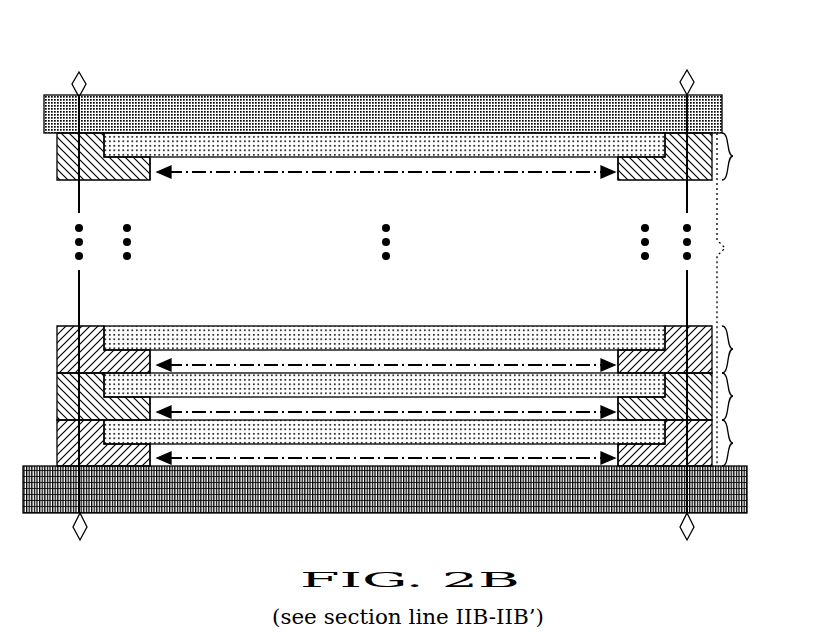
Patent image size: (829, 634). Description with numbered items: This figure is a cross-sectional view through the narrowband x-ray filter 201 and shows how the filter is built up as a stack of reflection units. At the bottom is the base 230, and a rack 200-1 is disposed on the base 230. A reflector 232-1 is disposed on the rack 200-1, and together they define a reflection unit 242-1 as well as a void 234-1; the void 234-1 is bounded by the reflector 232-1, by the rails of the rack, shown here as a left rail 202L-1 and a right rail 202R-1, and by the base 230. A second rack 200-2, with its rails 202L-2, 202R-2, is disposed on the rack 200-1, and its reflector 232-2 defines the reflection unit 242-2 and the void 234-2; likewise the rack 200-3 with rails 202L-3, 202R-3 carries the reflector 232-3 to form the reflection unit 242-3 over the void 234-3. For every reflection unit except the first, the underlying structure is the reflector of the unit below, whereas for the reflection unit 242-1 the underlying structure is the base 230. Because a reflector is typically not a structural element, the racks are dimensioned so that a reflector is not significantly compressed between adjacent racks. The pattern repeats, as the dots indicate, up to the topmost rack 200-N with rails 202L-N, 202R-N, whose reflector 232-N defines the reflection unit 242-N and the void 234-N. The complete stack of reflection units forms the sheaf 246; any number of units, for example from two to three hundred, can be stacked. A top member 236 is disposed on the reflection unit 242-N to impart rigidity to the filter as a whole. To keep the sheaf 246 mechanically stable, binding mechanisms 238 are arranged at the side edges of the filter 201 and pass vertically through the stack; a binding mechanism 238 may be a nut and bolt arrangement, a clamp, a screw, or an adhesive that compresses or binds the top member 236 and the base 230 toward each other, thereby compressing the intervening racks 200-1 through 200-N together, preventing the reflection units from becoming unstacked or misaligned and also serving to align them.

The narrowband x-ray filter 201 is at (236, 64).
The binding mechanism 238 is at (87, 82).
The top member 236 is at (403, 126).
The base 230 is at (405, 500).
The reflector 232-N is at (487, 142).
The reflector 232-3 is at (455, 340).
The reflector 232-2 is at (503, 385).
The reflector 232-1 is at (552, 433).
The void 234-N is at (253, 168).
The void 234-3 is at (349, 362).
The void 234-2 is at (294, 409).
The void 234-1 is at (238, 455).
The rack 200-N is at (445, 170).
The rack 200-3 is at (181, 363).
The rack 200-2 is at (415, 410).
The rack 200-1 is at (276, 460).
The rail 202L-N is at (88, 157).
The rail 202L-3 is at (70, 345).
The rail 202L-2 is at (92, 397).
The rail 202L-1 is at (133, 453).
The rail 202R-N is at (677, 162).
The rail 202R-3 is at (697, 350).
The rail 202R-2 is at (680, 407).
The rail 202R-1 is at (640, 455).
The reflection unit 242-N is at (766, 156).
The reflection unit 242-3 is at (763, 349).
The reflection unit 242-2 is at (764, 396).
The reflection unit 242-1 is at (763, 443).
The sheaf 246 is at (751, 299).